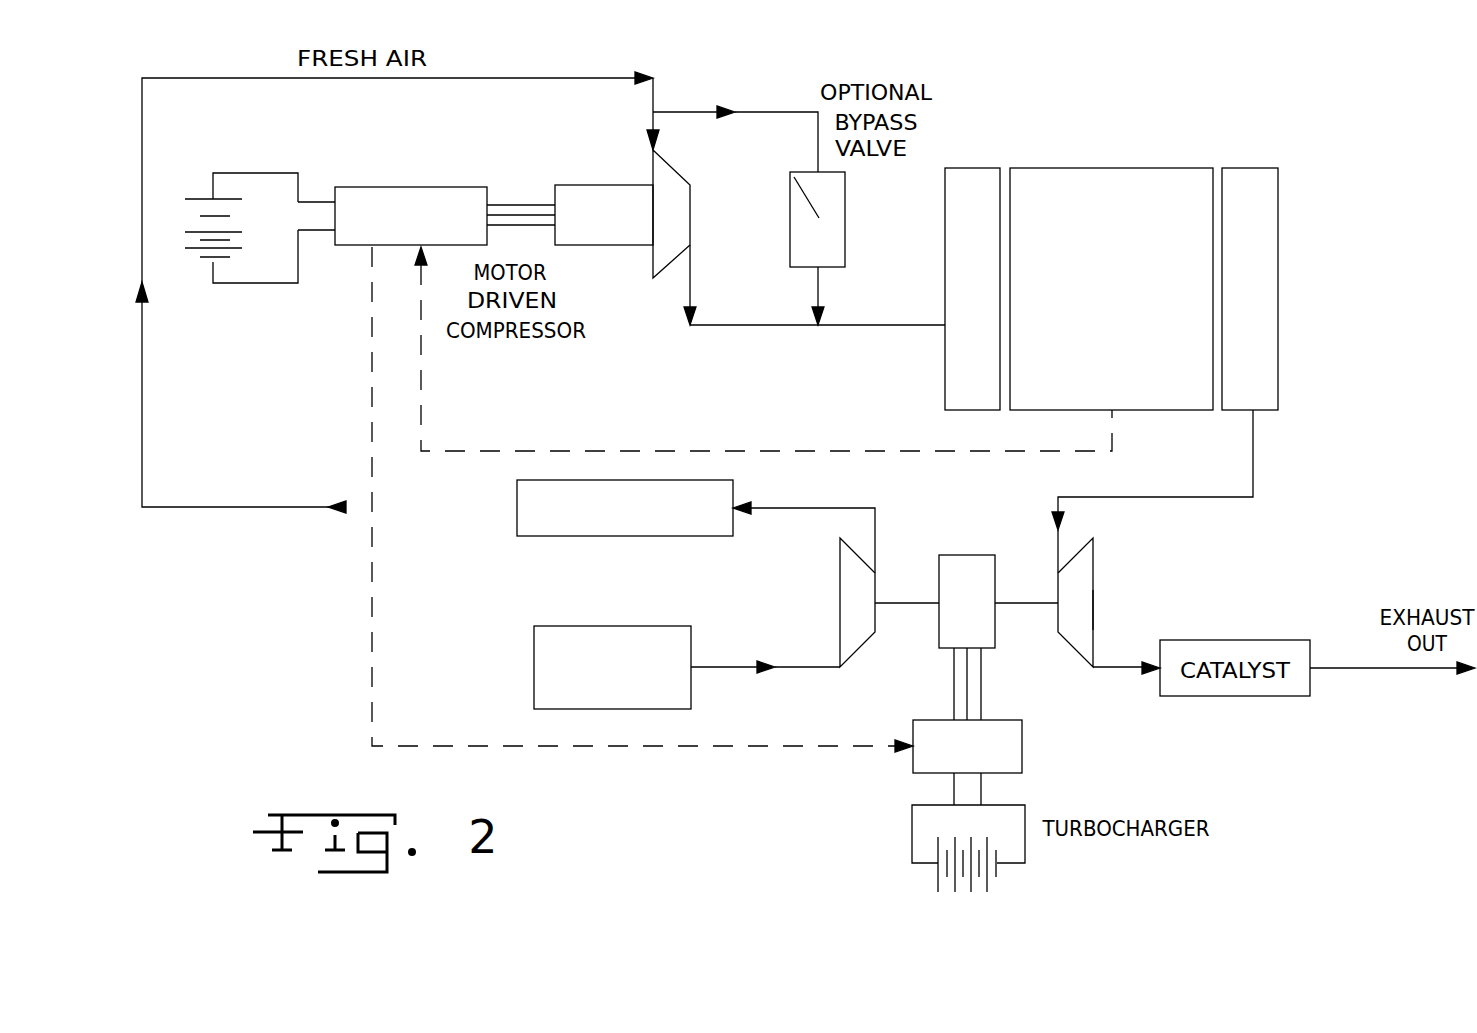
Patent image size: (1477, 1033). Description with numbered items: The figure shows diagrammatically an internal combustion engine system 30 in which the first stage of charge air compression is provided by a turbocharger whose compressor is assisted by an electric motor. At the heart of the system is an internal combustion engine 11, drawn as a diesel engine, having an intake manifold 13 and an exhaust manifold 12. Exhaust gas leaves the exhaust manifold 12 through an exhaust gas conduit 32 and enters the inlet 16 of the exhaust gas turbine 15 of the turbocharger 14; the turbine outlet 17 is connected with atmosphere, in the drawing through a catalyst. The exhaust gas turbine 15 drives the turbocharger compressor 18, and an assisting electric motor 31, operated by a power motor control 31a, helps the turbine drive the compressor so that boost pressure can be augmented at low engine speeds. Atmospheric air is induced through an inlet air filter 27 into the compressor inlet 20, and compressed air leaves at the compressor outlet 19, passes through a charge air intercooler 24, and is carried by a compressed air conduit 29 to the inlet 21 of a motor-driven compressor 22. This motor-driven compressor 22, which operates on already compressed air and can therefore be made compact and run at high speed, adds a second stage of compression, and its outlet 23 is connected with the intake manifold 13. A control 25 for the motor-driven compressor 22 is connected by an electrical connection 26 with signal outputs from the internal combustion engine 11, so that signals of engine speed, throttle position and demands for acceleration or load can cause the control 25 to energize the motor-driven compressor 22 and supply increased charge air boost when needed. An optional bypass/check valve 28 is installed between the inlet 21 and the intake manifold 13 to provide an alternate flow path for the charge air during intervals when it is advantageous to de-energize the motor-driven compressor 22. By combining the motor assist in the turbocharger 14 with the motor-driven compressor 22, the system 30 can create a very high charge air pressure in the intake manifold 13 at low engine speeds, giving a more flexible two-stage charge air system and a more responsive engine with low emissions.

The internal combustion engine 11 is at (1120, 176).
The exhaust manifold 12 is at (1278, 258).
The intake manifold 13 is at (945, 381).
The turbocharger 14 is at (1124, 550).
The exhaust gas turbine 15 is at (1093, 610).
The turbine inlet 16 is at (1058, 573).
The turbine outlet 17 is at (1093, 667).
The turbocharger compressor 18 is at (840, 607).
The compressor outlet 19 is at (875, 573).
The compressor inlet 20 is at (840, 667).
The motor-driven compressor inlet 21 is at (655, 150).
The motor-driven compressor 22 is at (653, 258).
The motor-driven compressor outlet 23 is at (692, 248).
The charge air intercooler 24 is at (580, 536).
The control 25 is at (400, 187).
The electrical connection 26 is at (628, 451).
The inlet air filter 27 is at (534, 680).
The optional bypass/check valve 28 is at (838, 210).
The compressed air conduit 29 is at (143, 432).
The system 30 is at (1242, 118).
The assisting electric motor 31 is at (967, 560).
The power motor control 31a is at (1022, 750).
The exhaust gas conduit 32 is at (1253, 466).